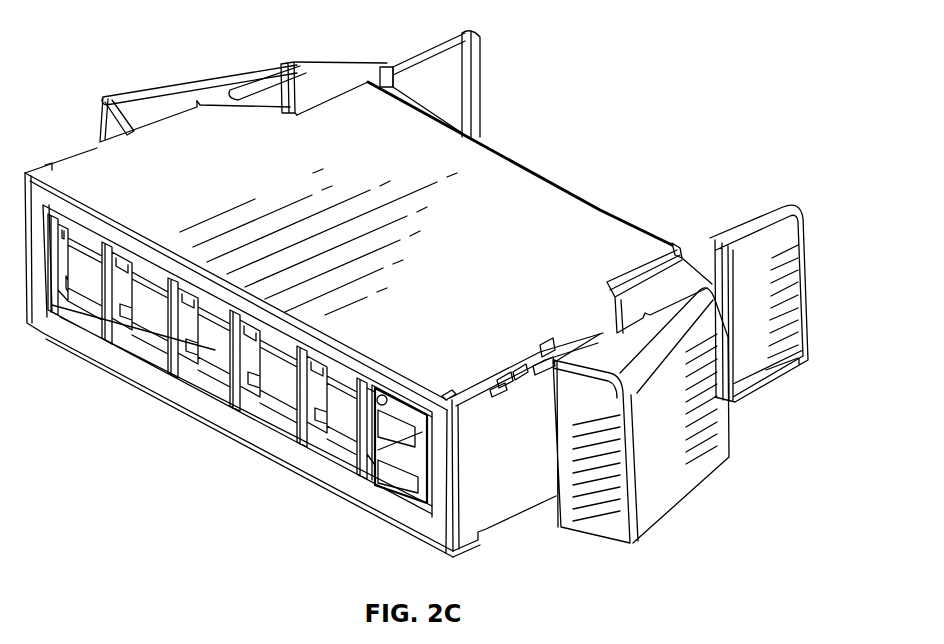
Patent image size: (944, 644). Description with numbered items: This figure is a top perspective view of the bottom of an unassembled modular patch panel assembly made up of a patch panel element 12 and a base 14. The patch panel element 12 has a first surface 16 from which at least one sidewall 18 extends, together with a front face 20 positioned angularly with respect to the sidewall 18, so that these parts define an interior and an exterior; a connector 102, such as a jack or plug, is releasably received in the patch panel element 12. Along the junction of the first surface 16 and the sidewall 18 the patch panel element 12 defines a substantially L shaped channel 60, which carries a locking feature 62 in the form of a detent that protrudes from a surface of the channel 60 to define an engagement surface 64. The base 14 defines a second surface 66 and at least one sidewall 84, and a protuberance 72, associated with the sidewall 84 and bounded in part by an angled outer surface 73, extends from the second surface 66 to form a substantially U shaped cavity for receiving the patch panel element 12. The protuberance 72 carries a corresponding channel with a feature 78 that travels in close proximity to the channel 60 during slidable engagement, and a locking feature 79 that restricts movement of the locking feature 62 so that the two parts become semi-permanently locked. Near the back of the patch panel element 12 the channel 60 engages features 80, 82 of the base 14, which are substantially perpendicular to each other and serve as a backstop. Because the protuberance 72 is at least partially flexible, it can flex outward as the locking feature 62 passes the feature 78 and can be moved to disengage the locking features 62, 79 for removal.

The patch panel element 12 is at (83, 170).
The base 14 is at (760, 263).
The first surface 16 is at (463, 236).
The sidewall 18 is at (516, 489).
The front face 20 is at (190, 399).
The channel 60 is at (673, 256).
The locking feature 62 is at (520, 373).
The engagement surface 64 is at (503, 375).
The second surface 66 is at (343, 377).
The protuberance 72 is at (658, 482).
The outer surface 73 is at (643, 424).
The feature 78 is at (170, 100).
The locking feature 79 is at (223, 100).
The feature 80 is at (470, 33).
The feature 82 is at (466, 93).
The sidewall 84 is at (297, 83).
The connector 102 is at (387, 447).